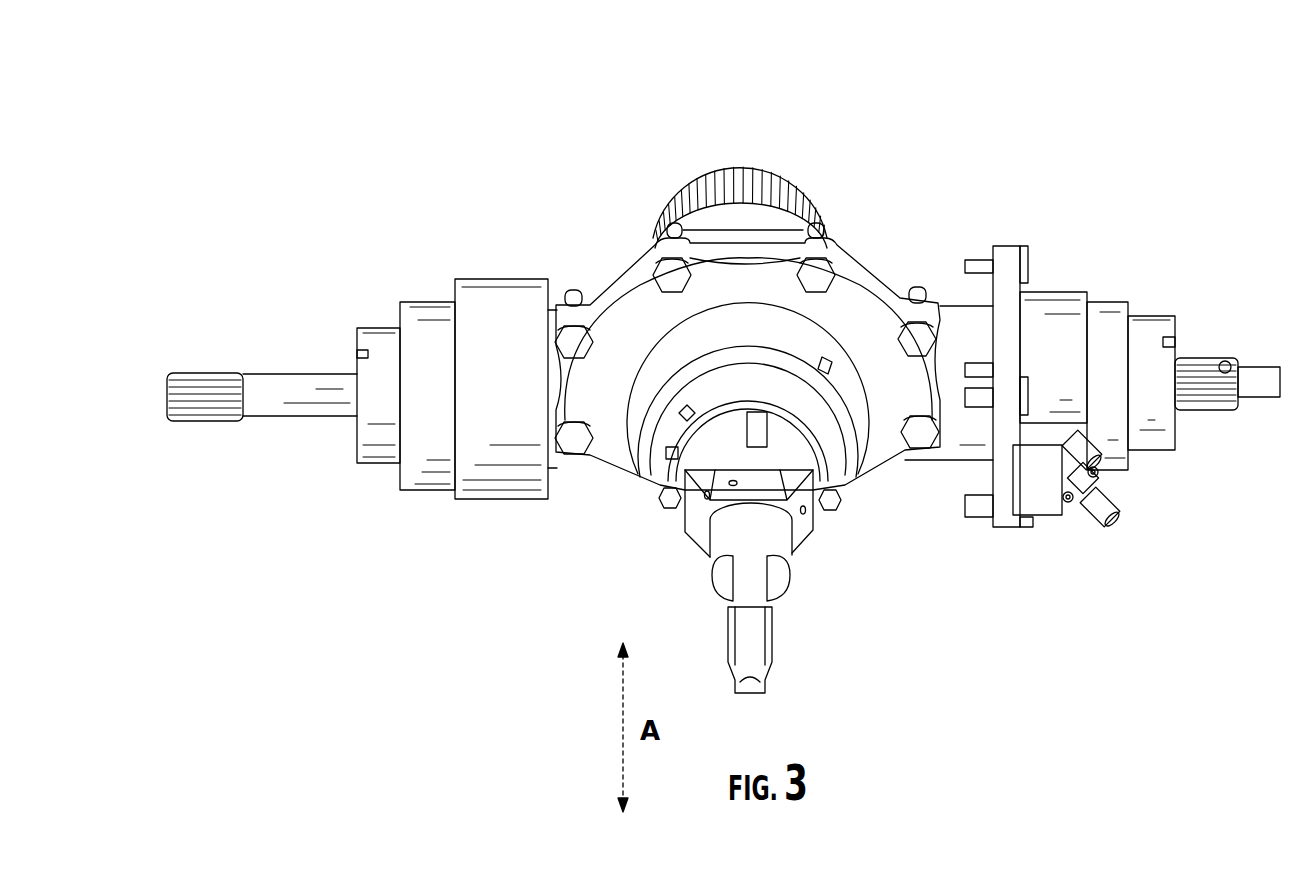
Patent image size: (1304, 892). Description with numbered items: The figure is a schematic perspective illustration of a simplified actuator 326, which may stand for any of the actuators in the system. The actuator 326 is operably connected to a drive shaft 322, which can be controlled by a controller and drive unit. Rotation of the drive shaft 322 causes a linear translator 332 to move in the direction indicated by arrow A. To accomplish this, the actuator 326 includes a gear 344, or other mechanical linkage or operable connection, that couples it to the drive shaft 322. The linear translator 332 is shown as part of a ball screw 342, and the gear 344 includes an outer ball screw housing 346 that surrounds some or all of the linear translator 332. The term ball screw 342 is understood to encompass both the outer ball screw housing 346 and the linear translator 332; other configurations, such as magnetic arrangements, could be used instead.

The actuator 326 is at (723, 370).
The drive shaft 322 is at (1203, 370).
The gear 344 is at (854, 278).
The ball screw 342 is at (843, 483).
The outer ball screw housing 346 is at (680, 493).
The linear translator 332 is at (773, 572).